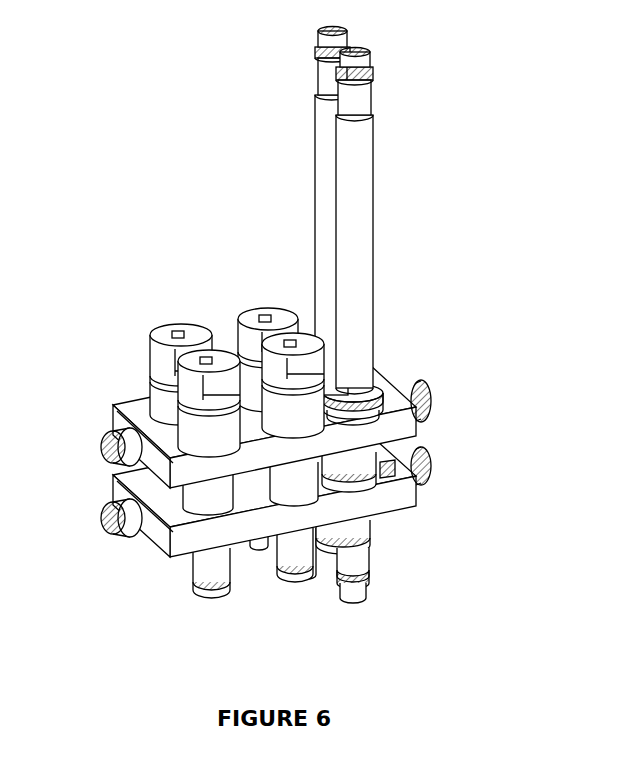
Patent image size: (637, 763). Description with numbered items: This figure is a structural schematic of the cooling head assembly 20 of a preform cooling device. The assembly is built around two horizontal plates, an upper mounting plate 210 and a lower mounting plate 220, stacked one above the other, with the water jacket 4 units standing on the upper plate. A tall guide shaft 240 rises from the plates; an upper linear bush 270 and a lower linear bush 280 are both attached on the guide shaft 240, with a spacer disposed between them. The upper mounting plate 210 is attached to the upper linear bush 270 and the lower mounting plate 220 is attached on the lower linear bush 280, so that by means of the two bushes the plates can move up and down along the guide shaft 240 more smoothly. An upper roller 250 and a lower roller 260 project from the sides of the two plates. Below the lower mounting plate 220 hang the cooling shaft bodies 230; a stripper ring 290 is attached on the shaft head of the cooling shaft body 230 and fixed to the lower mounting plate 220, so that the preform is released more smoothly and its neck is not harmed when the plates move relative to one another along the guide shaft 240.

The cooling head assembly 20 is at (277, 349).
The water jacket 4 is at (177, 327).
The guide shaft 240 is at (328, 203).
The upper linear bush 270 is at (377, 390).
The upper roller 250 is at (113, 410).
The lower linear bush 280 is at (393, 472).
The upper mounting plate 210 is at (299, 548).
The lower mounting plate 220 is at (260, 523).
The cooling shaft body 230 is at (203, 578).
The stripper ring 290 is at (313, 557).
The lower roller 260 is at (122, 543).